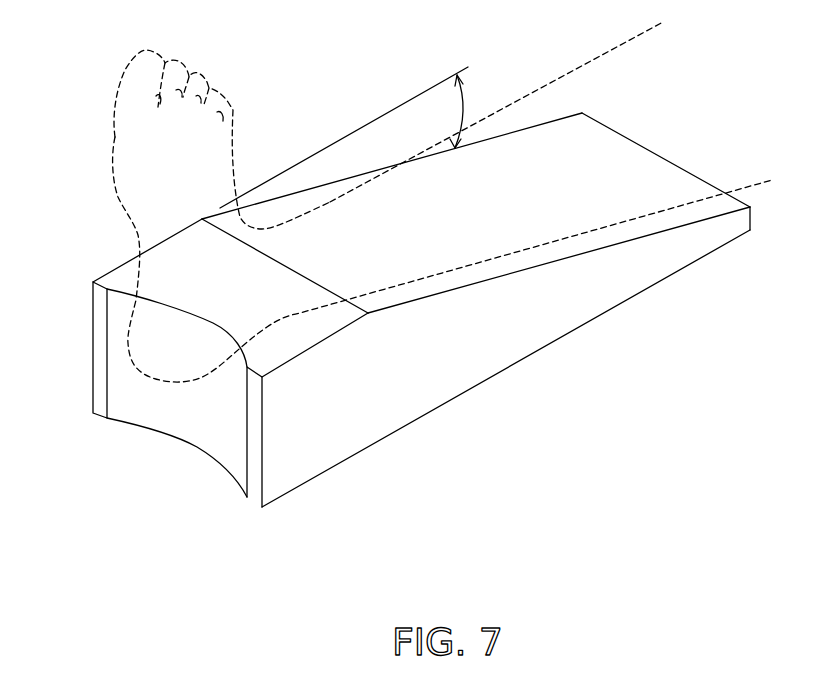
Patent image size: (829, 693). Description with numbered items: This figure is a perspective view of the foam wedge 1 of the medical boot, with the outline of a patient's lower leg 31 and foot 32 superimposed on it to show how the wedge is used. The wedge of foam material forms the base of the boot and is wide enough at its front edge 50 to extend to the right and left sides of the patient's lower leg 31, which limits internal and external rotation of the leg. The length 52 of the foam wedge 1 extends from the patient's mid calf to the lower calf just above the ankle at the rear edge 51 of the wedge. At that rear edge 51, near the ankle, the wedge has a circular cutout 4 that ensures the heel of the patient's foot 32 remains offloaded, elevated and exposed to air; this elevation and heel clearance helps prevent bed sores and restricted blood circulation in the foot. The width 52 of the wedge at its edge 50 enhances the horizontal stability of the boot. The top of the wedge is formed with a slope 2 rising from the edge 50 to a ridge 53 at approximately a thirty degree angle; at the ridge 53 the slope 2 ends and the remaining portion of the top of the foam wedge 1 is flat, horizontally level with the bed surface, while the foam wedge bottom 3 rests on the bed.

The foam wedge 1 is at (405, 296).
The foam wedge slope 2 is at (351, 137).
The foam wedge bottom 3 is at (567, 335).
The circular cutout 4 is at (118, 383).
The lower leg 31 is at (580, 68).
The foot 32 is at (153, 153).
The front edge 50 is at (647, 143).
The rear edge 51 is at (213, 323).
The length 52 is at (302, 485).
The ridge 53 is at (355, 308).